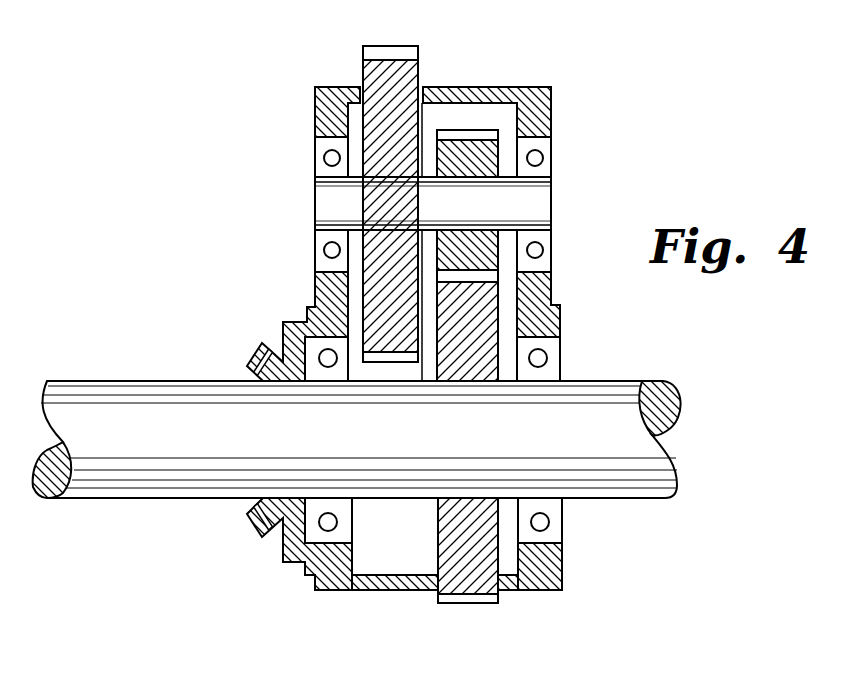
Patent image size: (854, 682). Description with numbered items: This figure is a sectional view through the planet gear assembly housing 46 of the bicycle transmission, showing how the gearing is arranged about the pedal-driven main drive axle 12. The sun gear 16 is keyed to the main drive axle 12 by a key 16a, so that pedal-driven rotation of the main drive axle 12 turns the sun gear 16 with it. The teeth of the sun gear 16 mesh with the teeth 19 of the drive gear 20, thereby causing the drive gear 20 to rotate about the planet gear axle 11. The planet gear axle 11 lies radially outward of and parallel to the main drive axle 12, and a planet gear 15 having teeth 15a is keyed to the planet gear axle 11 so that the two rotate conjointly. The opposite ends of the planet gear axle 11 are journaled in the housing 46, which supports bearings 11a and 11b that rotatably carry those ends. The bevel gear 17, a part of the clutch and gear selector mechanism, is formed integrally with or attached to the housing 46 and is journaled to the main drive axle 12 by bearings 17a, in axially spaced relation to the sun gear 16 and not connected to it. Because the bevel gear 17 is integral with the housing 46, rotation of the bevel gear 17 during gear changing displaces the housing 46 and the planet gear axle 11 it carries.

The planet gear axle 11 is at (397, 197).
The bearing 11a is at (321, 161).
The bearing 11b is at (544, 158).
The main drive axle 12 is at (280, 447).
The planet gear 15 is at (374, 71).
The teeth 15a is at (397, 47).
The sun gear 16 is at (438, 544).
The key 16a is at (477, 608).
The bevel gear 17 is at (284, 321).
The bearings 17a is at (333, 368).
The teeth 19 is at (474, 130).
The drive gear 20 is at (498, 158).
The housing 46 is at (298, 109).